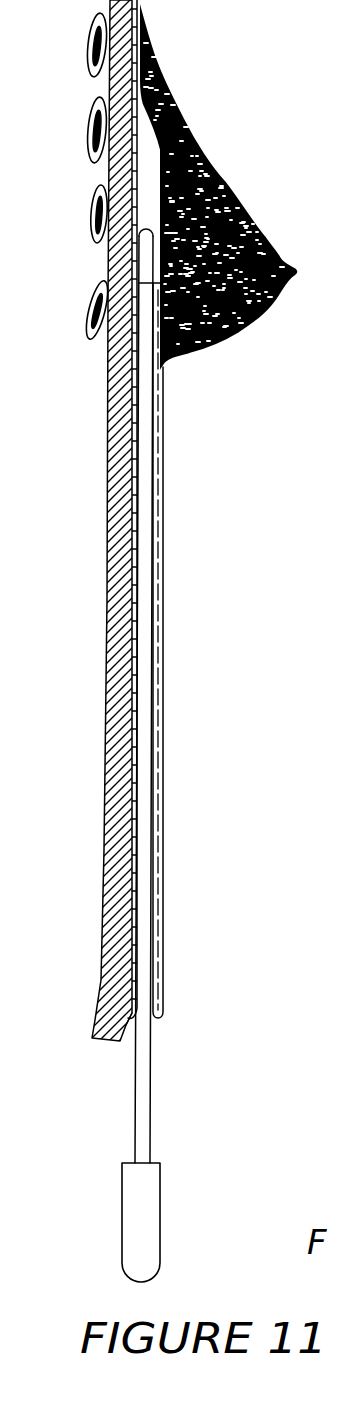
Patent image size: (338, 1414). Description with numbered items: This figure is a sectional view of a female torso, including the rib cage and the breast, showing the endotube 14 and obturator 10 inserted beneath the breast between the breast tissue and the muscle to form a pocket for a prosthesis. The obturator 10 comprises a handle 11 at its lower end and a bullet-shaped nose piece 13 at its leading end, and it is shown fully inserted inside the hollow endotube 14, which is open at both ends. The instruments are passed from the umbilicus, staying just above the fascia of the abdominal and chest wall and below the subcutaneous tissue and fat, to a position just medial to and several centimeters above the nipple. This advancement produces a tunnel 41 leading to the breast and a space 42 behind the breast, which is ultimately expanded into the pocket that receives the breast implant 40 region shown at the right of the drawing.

The obturator 10 is at (159, 755).
The handle 11 is at (144, 1206).
The bullet-shaped nose piece 13 is at (147, 242).
The endotube 14 is at (203, 650).
The tunnel 41 is at (165, 765).
The space behind the breast 42 is at (145, 176).
The breast 40 is at (237, 190).